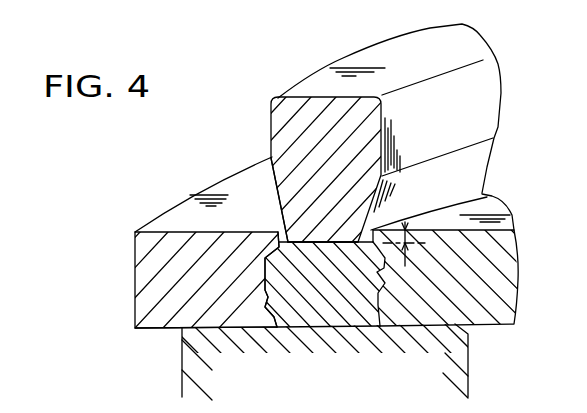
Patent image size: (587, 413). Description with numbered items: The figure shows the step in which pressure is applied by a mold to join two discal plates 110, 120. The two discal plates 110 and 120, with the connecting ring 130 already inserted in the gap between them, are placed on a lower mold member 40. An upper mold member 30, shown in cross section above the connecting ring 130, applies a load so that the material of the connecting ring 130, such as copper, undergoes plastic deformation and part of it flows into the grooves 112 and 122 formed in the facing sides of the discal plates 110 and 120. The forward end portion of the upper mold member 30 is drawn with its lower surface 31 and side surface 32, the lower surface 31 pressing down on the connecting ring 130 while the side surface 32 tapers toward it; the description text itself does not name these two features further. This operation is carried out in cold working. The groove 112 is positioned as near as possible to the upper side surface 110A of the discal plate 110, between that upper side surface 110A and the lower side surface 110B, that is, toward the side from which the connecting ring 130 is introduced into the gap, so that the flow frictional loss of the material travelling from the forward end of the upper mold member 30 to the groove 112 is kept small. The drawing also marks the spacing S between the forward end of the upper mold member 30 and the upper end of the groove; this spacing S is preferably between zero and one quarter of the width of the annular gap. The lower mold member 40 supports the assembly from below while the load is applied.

The upper mold member 30 is at (318, 112).
The bottom surface of ring 31 is at (312, 243).
The side surface of ring 32 is at (292, 202).
The discal plate 110 is at (158, 243).
The upper side surface 110A is at (190, 210).
The lower side surface 110B is at (176, 328).
The groove 112 is at (265, 295).
The discal plate 120 is at (494, 242).
The groove 122 is at (383, 297).
The connecting ring 130 is at (330, 318).
The lower mold member 40 is at (458, 352).
The spacing S is at (408, 244).